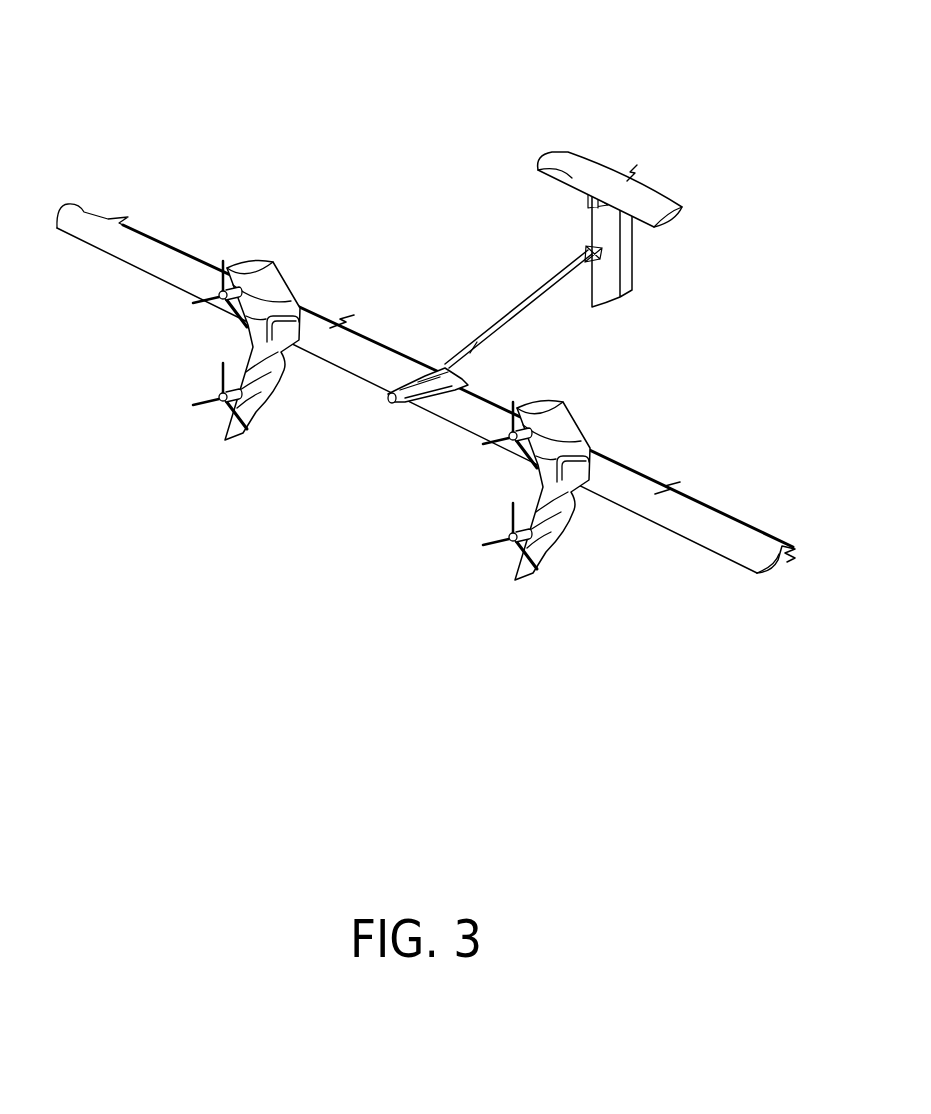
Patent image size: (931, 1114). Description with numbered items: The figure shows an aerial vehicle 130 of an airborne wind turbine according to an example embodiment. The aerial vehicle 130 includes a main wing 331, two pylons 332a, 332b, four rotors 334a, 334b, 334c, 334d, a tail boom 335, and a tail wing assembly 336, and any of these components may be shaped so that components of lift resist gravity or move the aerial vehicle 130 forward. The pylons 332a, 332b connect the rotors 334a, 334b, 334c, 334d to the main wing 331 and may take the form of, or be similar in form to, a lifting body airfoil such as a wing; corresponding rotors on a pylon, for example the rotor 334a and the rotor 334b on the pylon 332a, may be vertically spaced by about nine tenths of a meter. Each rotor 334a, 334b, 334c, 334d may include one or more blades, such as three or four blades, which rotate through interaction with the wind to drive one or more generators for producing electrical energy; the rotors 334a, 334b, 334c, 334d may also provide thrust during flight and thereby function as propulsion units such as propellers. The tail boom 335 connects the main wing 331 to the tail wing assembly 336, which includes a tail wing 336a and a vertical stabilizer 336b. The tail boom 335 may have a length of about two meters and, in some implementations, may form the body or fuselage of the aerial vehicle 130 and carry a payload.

The aerial vehicle 130 is at (426, 294).
The main wing 331 is at (165, 263).
The pylon 332a is at (253, 265).
The pylon 332b is at (541, 407).
The rotor 334a is at (222, 300).
The rotor 334b is at (222, 400).
The rotor 334c is at (509, 443).
The rotor 334d is at (508, 544).
The tail boom 335 is at (508, 315).
The tail wing assembly 336 is at (655, 223).
The tail wing 336a is at (662, 211).
The vertical stabilizer 336b is at (627, 263).